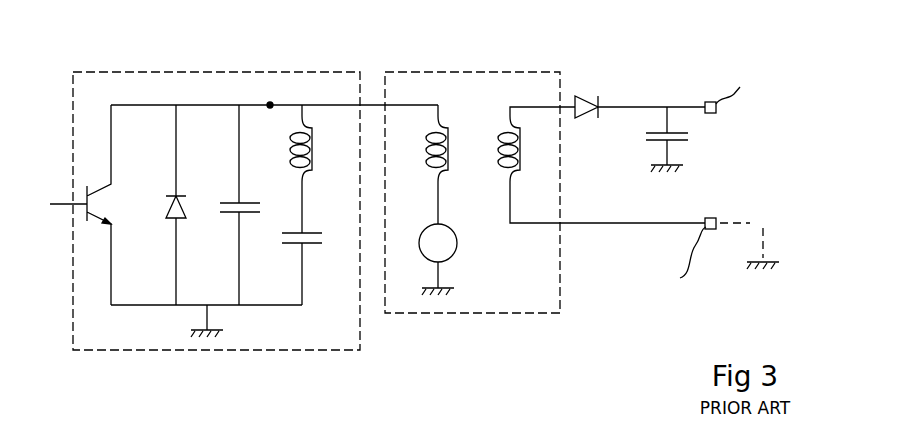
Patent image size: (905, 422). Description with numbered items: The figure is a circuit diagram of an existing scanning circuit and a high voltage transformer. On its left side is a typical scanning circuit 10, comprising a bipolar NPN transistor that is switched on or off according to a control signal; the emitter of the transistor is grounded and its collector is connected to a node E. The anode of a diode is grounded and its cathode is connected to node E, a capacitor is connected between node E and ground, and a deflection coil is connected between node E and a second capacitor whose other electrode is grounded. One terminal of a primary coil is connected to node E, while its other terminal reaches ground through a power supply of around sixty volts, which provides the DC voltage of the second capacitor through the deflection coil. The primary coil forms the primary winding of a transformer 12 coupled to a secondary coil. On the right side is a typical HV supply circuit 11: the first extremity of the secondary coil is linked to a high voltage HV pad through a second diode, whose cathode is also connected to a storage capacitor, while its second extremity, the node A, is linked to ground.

The scanning circuit 10 is at (207, 72).
The HV supply circuit 11 is at (709, 61).
The transformer 12 is at (455, 72).